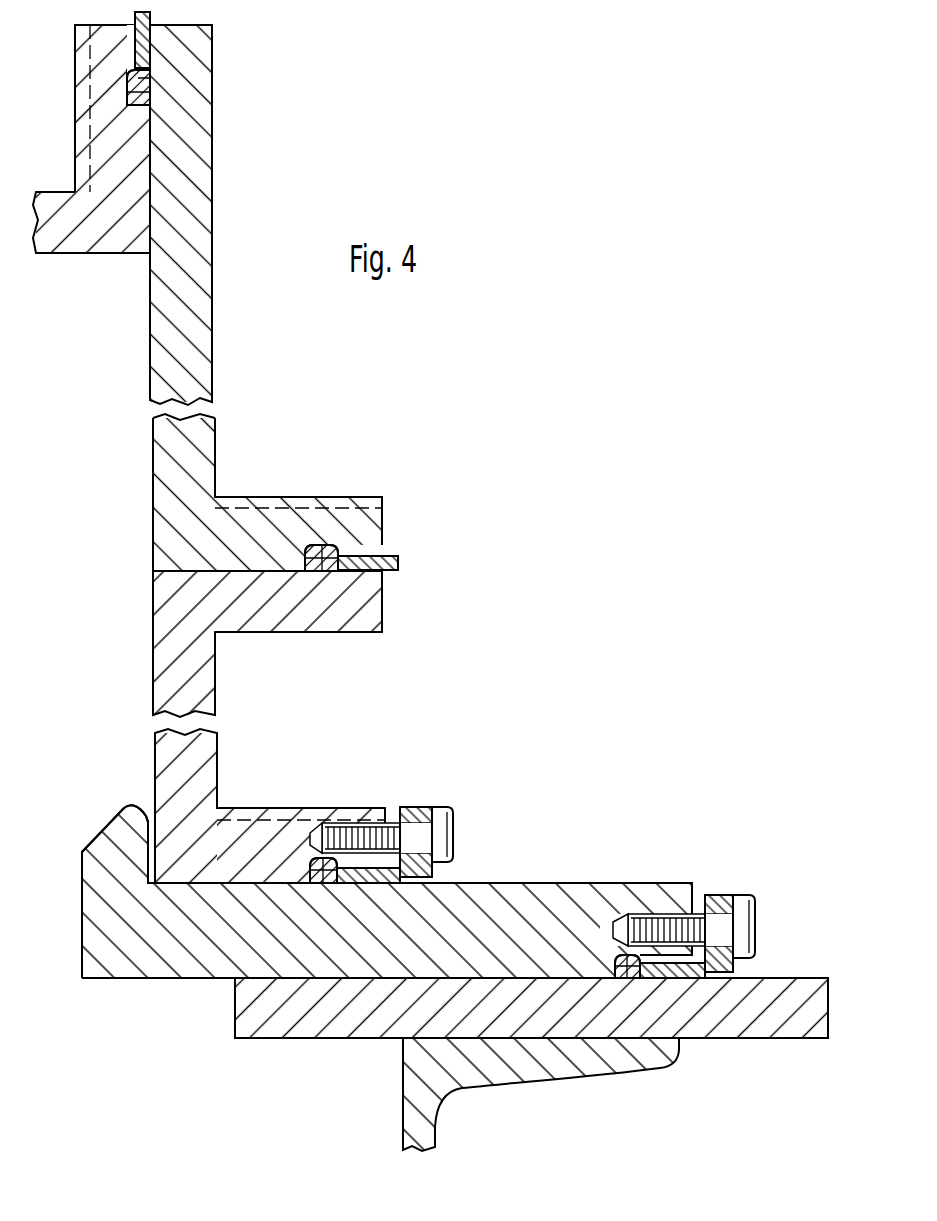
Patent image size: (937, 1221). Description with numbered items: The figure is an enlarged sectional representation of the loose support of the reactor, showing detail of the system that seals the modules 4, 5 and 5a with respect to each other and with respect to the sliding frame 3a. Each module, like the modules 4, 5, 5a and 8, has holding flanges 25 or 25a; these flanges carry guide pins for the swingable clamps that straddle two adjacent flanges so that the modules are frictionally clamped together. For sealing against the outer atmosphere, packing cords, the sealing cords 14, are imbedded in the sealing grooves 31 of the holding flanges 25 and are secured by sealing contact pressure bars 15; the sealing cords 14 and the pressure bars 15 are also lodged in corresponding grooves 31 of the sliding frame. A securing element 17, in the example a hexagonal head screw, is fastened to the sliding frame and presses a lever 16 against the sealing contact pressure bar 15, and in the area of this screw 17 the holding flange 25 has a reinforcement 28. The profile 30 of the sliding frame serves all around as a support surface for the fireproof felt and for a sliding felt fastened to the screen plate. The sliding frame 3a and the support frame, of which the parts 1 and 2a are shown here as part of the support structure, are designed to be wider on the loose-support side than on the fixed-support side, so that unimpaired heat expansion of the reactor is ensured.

The housing part 1 is at (553, 1063).
The flange of housing 2a is at (235, 1024).
The sliding frame 3a is at (135, 978).
The module 4 is at (208, 748).
The module 5 is at (160, 455).
The module 5a is at (205, 333).
The module 8 is at (76, 255).
The sealing cord 14 is at (150, 80).
The sealing contact pressure bar 15 is at (152, 18).
The lever 16 is at (413, 807).
The securing element 17 is at (440, 807).
The holding flange 25 is at (105, 157).
The holding flange 25a is at (185, 125).
The reinforcement 28 is at (80, 118).
The profile 30 is at (118, 832).
The sealing groove 31 is at (128, 95).